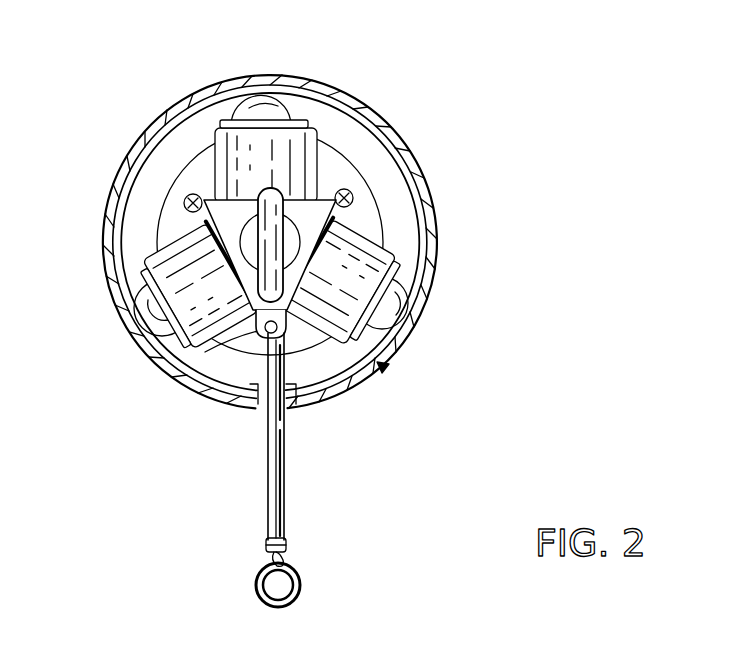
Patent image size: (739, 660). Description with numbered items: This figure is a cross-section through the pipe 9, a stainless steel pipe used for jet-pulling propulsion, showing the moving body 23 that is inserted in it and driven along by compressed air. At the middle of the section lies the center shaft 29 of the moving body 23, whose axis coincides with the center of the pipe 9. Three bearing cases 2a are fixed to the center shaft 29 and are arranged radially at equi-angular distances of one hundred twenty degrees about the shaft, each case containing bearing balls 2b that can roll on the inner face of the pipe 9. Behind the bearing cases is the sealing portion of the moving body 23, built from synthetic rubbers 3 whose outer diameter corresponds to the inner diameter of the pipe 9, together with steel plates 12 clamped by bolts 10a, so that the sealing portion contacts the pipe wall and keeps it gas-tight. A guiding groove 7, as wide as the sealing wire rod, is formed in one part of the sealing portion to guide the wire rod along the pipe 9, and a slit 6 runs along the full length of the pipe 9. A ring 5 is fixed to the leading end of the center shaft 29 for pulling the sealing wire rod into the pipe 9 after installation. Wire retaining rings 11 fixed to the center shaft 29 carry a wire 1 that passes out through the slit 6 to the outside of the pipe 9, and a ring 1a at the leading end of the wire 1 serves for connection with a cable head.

The wire 1 is at (280, 499).
The ring 1a is at (298, 585).
The bearing case 2a is at (147, 259).
The bearing ball 2b is at (150, 326).
The synthetic rubber 3 is at (155, 187).
The ring 5 is at (284, 214).
The slit 6 is at (267, 422).
The guiding groove 7 is at (283, 415).
The pipe 9 is at (350, 105).
The bolt 10a is at (357, 192).
The wire retaining ring 11 is at (260, 336).
The steel plate 12 is at (165, 213).
The moving body 23 is at (385, 368).
The center shaft 29 is at (252, 242).